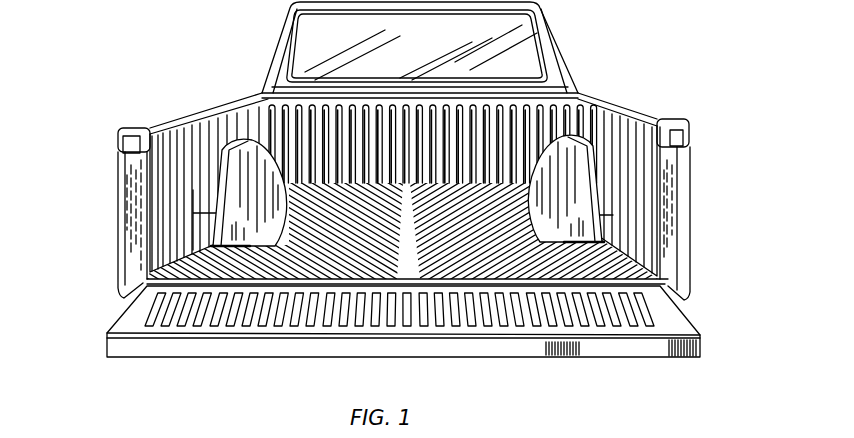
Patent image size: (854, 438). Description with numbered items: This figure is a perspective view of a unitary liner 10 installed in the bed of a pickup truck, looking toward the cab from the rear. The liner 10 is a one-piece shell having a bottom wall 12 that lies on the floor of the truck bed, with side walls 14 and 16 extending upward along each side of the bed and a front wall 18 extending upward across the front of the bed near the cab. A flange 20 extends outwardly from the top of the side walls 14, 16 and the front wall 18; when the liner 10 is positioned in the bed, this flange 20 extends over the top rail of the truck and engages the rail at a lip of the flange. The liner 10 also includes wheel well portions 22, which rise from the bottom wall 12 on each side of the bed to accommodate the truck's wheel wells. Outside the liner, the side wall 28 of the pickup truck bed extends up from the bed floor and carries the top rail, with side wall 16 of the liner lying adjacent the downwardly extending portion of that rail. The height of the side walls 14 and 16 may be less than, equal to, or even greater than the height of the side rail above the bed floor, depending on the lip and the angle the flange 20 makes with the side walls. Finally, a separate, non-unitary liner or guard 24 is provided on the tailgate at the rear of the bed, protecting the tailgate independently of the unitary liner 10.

The unitary liner 10 is at (612, 76).
The bottom wall 12 is at (490, 243).
The side wall 14 is at (165, 203).
The side wall 16 is at (650, 179).
The front wall 18 is at (333, 115).
The flange 20 is at (170, 120).
The wheel well portions 22 is at (238, 166).
The non-unitary liner or guard 24 is at (673, 317).
The side wall 28 is at (132, 223).